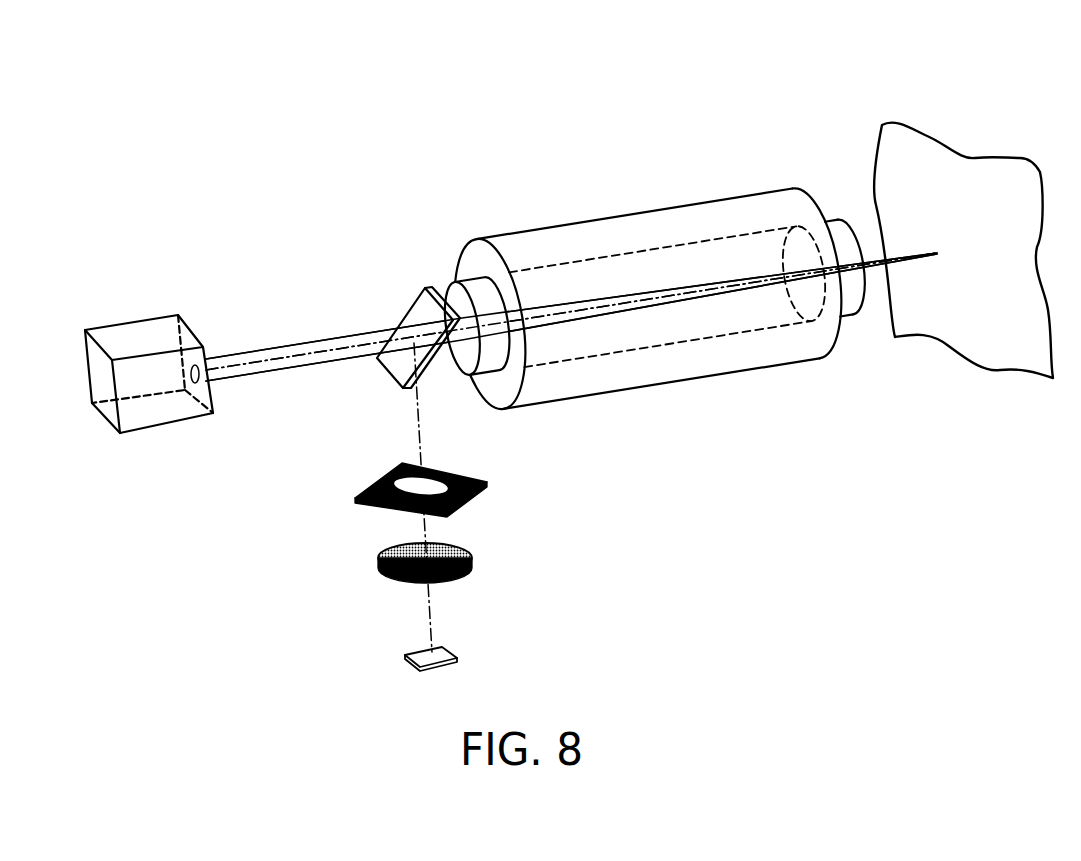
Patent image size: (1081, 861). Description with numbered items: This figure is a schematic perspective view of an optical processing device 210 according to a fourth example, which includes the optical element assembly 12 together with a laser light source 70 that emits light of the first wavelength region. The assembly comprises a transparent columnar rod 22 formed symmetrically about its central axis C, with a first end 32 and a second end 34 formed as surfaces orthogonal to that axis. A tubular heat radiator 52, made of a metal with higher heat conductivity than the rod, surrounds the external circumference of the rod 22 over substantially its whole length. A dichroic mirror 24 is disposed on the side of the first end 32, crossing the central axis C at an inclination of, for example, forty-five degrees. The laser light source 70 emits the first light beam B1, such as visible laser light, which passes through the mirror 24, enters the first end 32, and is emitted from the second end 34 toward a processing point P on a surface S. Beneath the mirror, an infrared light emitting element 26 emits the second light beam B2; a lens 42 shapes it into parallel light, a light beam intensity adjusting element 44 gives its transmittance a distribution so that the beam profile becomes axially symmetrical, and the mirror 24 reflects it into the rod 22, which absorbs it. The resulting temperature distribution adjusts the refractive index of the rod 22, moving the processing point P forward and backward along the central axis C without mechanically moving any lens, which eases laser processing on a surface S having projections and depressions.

The optical processing device 210 is at (730, 94).
The optical element assembly 12 is at (603, 157).
The laser light source 70 is at (137, 322).
The first light beam B1 is at (247, 375).
The central axis C is at (318, 343).
The mirror 24 is at (402, 319).
The rod 22 is at (654, 330).
The first end 32 is at (457, 353).
The tubular heat radiator 52 is at (727, 371).
The second end 34 is at (862, 316).
The second light beam B2 is at (420, 443).
The light beam intensity adjusting element 44 is at (468, 498).
The lens 42 is at (473, 563).
The light emitting element 26 is at (458, 659).
The surface S is at (955, 165).
The processing point P is at (937, 253).